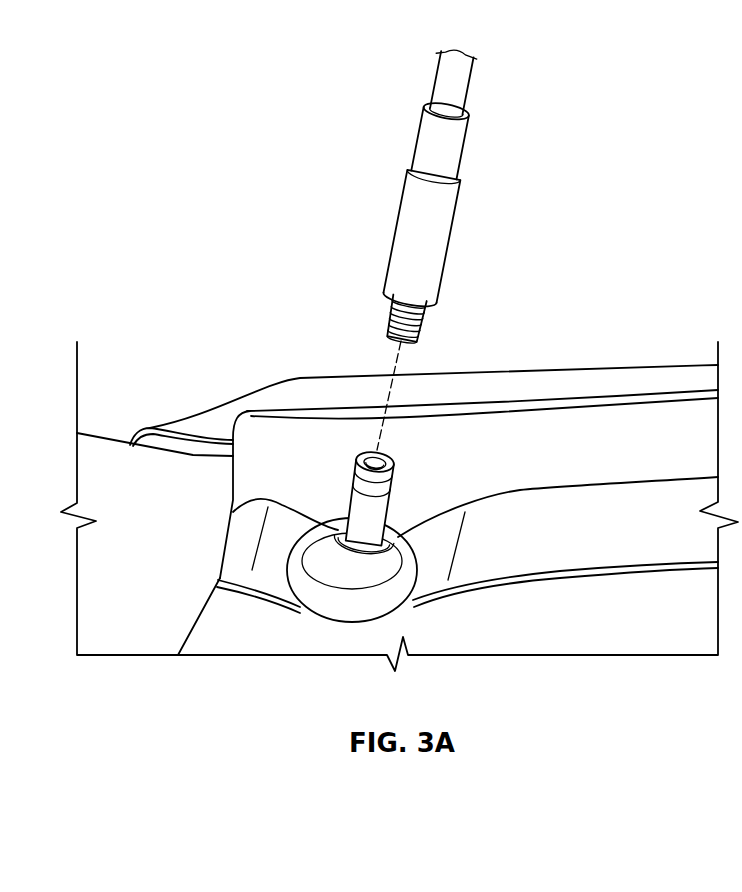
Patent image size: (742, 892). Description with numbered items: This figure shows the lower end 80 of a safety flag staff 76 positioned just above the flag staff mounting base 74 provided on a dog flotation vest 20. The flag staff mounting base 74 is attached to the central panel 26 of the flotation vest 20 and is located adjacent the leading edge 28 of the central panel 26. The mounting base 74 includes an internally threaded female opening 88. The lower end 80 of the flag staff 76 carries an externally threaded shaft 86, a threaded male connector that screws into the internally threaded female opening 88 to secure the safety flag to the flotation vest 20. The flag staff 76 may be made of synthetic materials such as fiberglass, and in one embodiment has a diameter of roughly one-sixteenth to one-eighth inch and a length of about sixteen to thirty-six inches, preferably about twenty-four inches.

The flotation vest 20 is at (621, 340).
The central panel 26 is at (596, 621).
The leading edge 28 is at (233, 476).
The flag staff mounting base 74 is at (345, 527).
The flag staff 76 is at (457, 90).
The lower end 80 is at (490, 226).
The externally threaded shaft 86 is at (390, 307).
The internally threaded female opening 88 is at (372, 450).